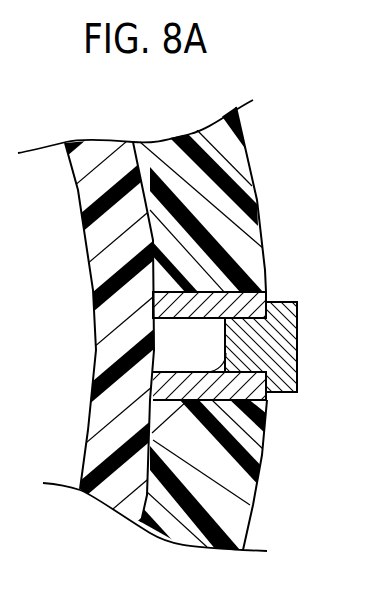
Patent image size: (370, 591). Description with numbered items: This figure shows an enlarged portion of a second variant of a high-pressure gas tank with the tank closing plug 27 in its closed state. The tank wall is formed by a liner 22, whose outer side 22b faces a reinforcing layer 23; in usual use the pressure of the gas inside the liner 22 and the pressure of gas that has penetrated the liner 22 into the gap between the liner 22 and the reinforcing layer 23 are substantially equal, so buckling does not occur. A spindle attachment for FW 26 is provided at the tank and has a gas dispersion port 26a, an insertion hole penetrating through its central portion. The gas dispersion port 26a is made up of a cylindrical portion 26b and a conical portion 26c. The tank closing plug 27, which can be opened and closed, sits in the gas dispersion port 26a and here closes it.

The liner 22 is at (86, 272).
The outer surface of housing wall 22b is at (93, 355).
The reinforcing layer 23 is at (250, 197).
The spindle attachment for FW 26 is at (274, 293).
The gas dispersion port 26a is at (250, 392).
The cylindrical portion 26b is at (267, 400).
The conical portion 26c is at (252, 506).
The tank closing plug 27 is at (295, 332).